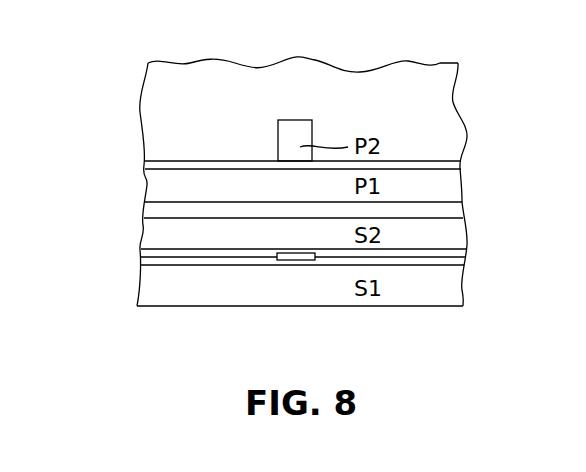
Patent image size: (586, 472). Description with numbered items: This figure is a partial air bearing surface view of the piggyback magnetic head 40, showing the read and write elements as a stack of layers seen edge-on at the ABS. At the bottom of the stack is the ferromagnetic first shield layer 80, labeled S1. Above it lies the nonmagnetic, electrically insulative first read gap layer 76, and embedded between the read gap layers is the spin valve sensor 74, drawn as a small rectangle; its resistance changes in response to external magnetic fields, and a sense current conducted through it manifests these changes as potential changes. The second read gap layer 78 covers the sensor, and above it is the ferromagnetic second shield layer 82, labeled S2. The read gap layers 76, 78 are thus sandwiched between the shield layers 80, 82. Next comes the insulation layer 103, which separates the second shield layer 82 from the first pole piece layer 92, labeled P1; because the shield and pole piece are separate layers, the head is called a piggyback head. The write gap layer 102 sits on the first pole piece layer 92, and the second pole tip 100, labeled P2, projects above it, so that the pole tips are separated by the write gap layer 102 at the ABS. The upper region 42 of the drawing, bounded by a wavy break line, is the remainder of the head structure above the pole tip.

The piggyback magnetic head 40 is at (480, 78).
The upper layer 42 is at (150, 93).
The second pole tip 100 is at (293, 130).
The write gap layer 102 is at (215, 161).
The first pole piece layer 92 is at (150, 188).
The insulation layer 103 is at (453, 212).
The second shield layer 82 is at (148, 240).
The spin valve sensor 74 is at (293, 260).
The first read gap layer 76 is at (203, 265).
The second read gap layer 78 is at (422, 252).
The first shield layer 80 is at (453, 288).